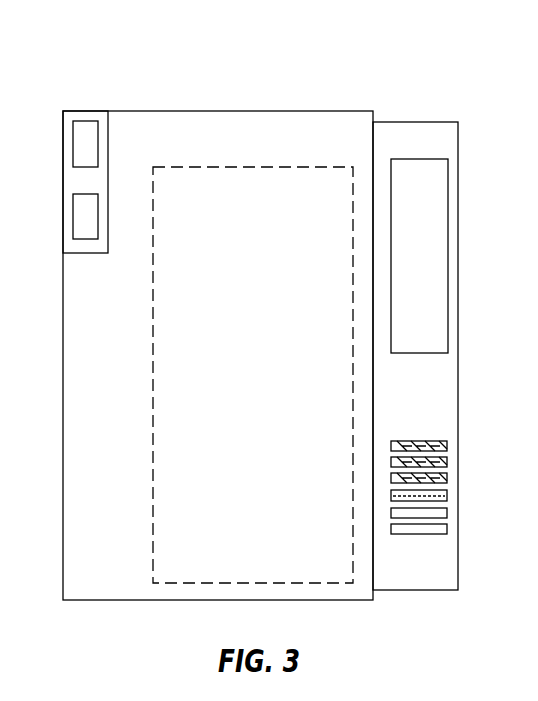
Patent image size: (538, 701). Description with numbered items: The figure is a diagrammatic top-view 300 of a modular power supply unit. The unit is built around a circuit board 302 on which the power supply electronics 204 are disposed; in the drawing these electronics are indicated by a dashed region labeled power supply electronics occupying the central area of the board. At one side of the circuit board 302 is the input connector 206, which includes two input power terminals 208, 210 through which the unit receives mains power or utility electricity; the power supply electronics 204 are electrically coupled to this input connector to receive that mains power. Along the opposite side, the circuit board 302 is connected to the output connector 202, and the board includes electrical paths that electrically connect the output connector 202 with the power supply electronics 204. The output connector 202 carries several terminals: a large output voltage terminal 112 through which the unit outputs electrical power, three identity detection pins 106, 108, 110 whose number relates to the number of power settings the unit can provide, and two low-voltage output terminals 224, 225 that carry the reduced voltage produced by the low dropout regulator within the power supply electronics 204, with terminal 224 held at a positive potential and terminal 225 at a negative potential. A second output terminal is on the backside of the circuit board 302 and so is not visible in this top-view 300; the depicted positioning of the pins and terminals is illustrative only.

The top-view 300 is at (307, 61).
The circuit board 302 is at (148, 111).
The input connector 206 is at (109, 139).
The input power terminal 208 is at (73, 150).
The input power terminal 210 is at (73, 213).
The power supply electronics 204 is at (253, 167).
The output connector 202 is at (410, 122).
The output voltage terminal 112 is at (448, 278).
The identity detection pin 106 is at (437, 442).
The identity detection pin 108 is at (447, 462).
The identity detection pin 110 is at (448, 479).
The low-voltage output terminal 224 is at (448, 518).
The low-voltage output terminal 225 is at (447, 528).